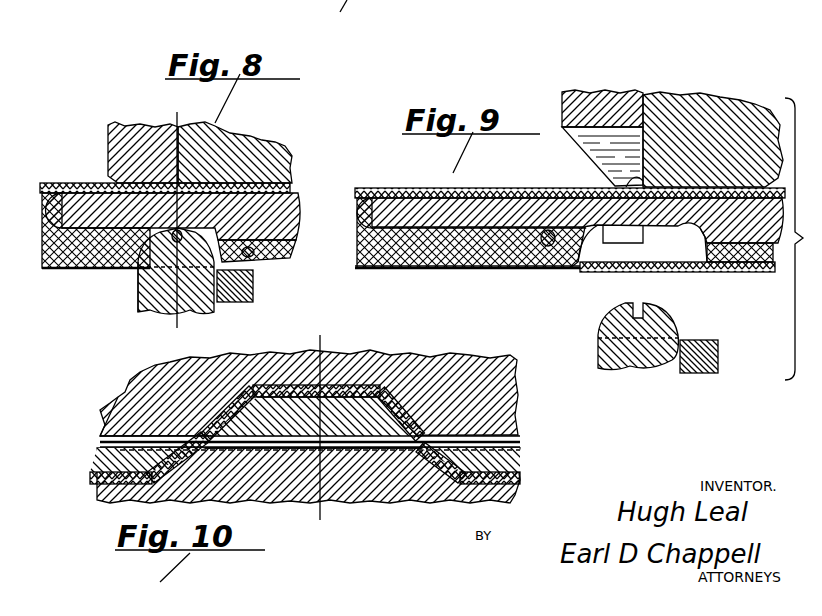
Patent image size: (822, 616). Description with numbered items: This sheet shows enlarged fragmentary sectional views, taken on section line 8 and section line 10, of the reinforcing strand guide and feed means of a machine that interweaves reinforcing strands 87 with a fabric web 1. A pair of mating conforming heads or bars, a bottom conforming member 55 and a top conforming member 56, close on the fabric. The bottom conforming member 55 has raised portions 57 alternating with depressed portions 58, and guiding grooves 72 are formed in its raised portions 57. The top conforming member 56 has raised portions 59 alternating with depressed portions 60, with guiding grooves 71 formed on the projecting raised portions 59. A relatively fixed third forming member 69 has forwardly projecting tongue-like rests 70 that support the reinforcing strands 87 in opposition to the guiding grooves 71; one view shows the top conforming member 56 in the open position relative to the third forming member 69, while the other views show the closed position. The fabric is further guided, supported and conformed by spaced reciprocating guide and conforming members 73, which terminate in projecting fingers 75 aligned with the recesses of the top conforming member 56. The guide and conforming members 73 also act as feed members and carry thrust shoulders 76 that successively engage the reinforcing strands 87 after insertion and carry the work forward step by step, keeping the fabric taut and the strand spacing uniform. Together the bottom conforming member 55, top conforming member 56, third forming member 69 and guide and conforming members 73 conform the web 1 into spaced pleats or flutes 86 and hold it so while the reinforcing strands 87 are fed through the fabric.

In FIG. 8, the web 1 is at (291, 188).
In FIG. 9, the web 1 is at (375, 188).
In FIG. 10, the web 1 is at (90, 480).
In FIG. 10, the section line 8— 8 is at (325, 520).
In FIG. 8, the section line 10— 10 is at (172, 112).
In FIG. 8, the bottom conforming member 55 is at (237, 302).
In FIG. 9, the bottom conforming member 55 is at (632, 362).
In FIG. 10, the bottom conforming member 55 is at (110, 495).
In FIG. 8, the top conforming member 56 is at (118, 135).
In FIG. 9, the top conforming member 56 is at (593, 98).
In FIG. 10, the top conforming member 56 is at (128, 393).
In FIG. 10, the raised portions 57 is at (410, 455).
In FIG. 10, the depressed portions 58 is at (466, 480).
In FIG. 9, the raised portions 59 is at (616, 152).
In FIG. 10, the raised portions 59 is at (112, 420).
In FIG. 10, the depressed portions 60 is at (278, 388).
In FIG. 8, the third forming member 69 is at (243, 157).
In FIG. 9, the third forming member 69 is at (717, 107).
In FIG. 9, the tongue-like rests 70 is at (617, 247).
In FIG. 10, the tongue-like rests 70 is at (100, 456).
In FIG. 9, the guiding grooves 71 is at (633, 180).
In FIG. 8, the guiding grooves 72 is at (182, 237).
In FIG. 9, the guiding grooves 72 is at (639, 309).
In FIG. 8, the guide and conforming members 73 is at (297, 240).
In FIG. 10, the guide and conforming members 73 is at (384, 396).
In FIG. 8, the projecting fingers 75 is at (77, 205).
In FIG. 9, the projecting fingers 75 is at (490, 212).
In FIG. 10, the projecting fingers 75 is at (408, 405).
In FIG. 8, the thrust shoulders 76 is at (256, 258).
In FIG. 9, the thrust shoulders 76 is at (548, 248).
In FIG. 8, the pleats or flutes 86 is at (73, 258).
In FIG. 9, the pleats or flutes 86 is at (395, 257).
In FIG. 10, the pleats or flutes 86 is at (437, 415).
In FIG. 8, the reinforcing strands 87 is at (139, 280).
In FIG. 9, the reinforcing strands 87 is at (517, 268).
In FIG. 10, the reinforcing strands 87 is at (521, 438).